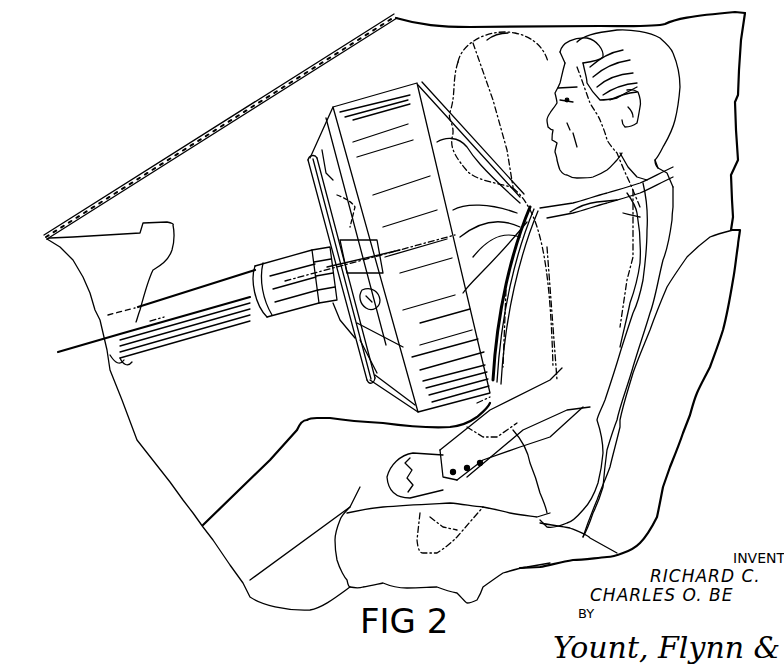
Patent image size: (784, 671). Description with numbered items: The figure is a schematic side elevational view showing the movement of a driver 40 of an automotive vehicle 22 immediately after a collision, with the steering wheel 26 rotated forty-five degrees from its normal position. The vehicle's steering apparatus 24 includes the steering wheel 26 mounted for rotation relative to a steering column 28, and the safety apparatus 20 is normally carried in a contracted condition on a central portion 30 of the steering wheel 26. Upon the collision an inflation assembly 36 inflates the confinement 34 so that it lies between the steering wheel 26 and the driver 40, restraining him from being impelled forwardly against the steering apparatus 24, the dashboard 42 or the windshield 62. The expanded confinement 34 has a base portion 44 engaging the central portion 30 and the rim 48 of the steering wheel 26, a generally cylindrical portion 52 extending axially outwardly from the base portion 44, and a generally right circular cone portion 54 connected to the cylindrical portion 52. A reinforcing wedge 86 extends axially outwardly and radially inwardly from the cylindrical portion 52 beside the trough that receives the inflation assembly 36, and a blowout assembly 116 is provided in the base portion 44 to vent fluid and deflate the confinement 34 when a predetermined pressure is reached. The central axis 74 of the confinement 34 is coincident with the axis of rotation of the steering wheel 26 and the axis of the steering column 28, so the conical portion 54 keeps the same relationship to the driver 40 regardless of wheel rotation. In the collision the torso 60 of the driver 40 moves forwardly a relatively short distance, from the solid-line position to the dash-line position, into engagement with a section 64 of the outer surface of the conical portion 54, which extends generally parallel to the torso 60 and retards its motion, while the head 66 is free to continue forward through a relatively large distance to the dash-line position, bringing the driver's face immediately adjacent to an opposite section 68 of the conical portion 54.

The safety apparatus 20 is at (350, 63).
The automotive vehicle 22 is at (130, 100).
The steering apparatus 24 is at (247, 218).
The steering wheel 26 is at (306, 196).
The steering column 28 is at (165, 337).
The central portion of the steering wheel 30 is at (333, 308).
The confinement 34 is at (417, 50).
The inflation assembly 36 is at (307, 215).
The driver 40 is at (673, 168).
The dashboard 42 is at (147, 258).
The base portion 44 is at (400, 343).
The rim of the steering wheel 48 is at (310, 157).
The cylindrical portion 52 is at (378, 100).
The right circular cone portion 54 is at (457, 72).
The torso 60 is at (507, 317).
The windshield 62 is at (248, 107).
The section of the outer surface 64 is at (507, 340).
The head 66 is at (487, 40).
The section of the outer surface 68 is at (472, 146).
The central axis 74 is at (86, 339).
The reinforcing wedge 86 is at (340, 177).
The blowout assembly 116 is at (383, 300).